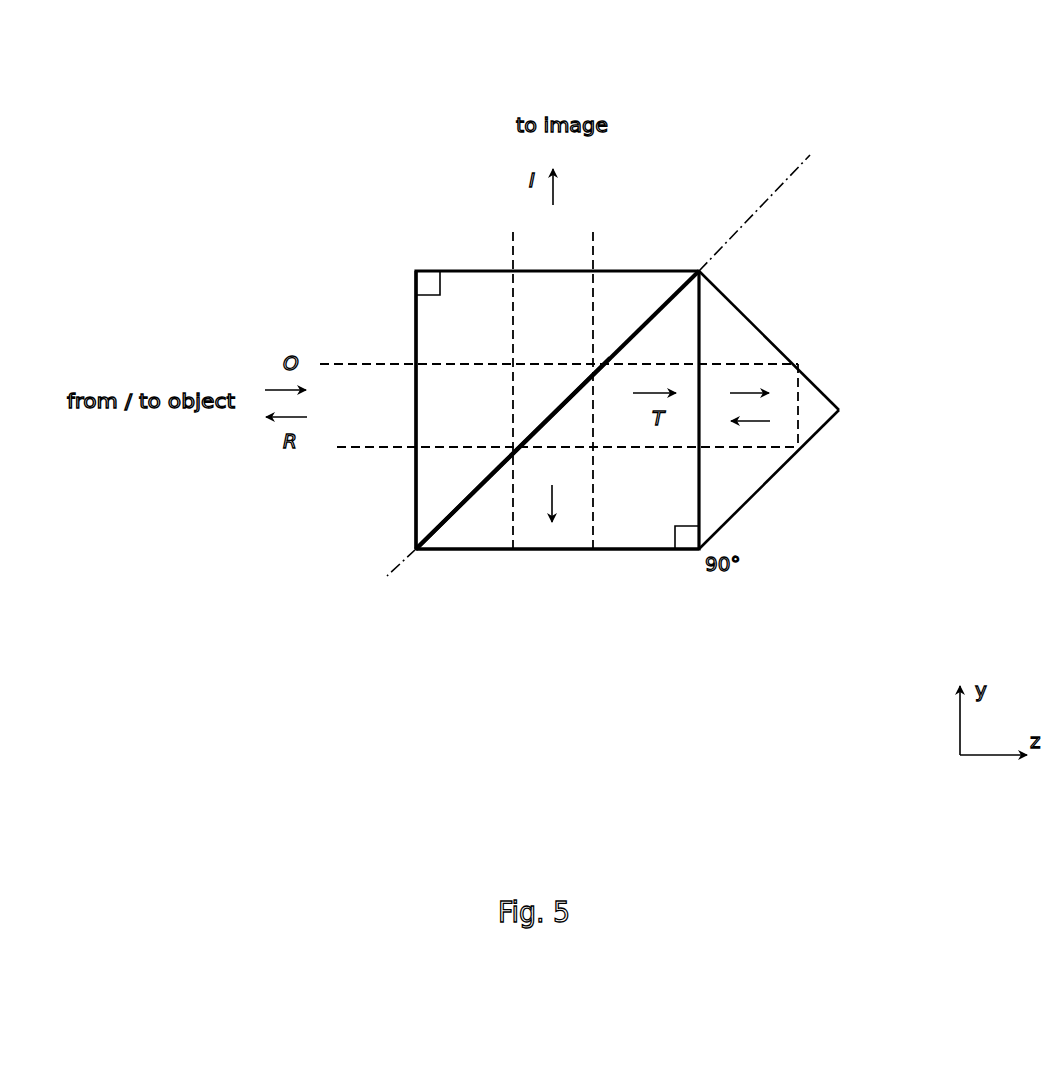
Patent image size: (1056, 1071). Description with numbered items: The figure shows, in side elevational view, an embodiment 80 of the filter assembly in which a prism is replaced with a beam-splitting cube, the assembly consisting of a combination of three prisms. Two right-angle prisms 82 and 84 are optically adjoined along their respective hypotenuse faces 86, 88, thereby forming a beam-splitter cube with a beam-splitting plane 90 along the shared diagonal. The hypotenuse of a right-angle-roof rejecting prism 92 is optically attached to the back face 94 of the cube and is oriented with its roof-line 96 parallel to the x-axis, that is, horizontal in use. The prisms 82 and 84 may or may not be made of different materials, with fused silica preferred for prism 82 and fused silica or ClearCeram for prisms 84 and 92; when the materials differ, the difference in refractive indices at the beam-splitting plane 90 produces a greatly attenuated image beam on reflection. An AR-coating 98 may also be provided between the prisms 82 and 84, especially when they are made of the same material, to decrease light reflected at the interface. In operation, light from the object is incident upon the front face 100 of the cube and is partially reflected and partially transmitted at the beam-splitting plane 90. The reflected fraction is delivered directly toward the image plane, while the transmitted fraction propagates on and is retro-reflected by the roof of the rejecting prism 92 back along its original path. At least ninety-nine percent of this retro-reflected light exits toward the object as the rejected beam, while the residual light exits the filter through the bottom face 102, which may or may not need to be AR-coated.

The embodiment of the filter assembly 80 is at (253, 160).
The right-angle prism 82 is at (430, 325).
The right-angle prism 84 is at (630, 527).
The hypotenuse face 86 is at (637, 327).
The hypotenuse face 88 is at (563, 407).
The beam-splitting plane 90 is at (757, 206).
The right-angle-roof rejecting prism 92 is at (730, 328).
The back face 94 is at (703, 477).
The roof-line 96 is at (817, 435).
The AR-coating 98 is at (442, 523).
The front face 100 is at (417, 497).
The bottom face 102 is at (537, 550).